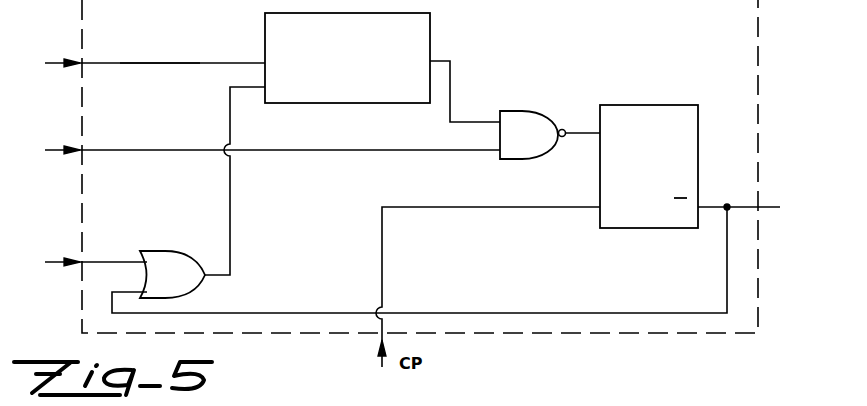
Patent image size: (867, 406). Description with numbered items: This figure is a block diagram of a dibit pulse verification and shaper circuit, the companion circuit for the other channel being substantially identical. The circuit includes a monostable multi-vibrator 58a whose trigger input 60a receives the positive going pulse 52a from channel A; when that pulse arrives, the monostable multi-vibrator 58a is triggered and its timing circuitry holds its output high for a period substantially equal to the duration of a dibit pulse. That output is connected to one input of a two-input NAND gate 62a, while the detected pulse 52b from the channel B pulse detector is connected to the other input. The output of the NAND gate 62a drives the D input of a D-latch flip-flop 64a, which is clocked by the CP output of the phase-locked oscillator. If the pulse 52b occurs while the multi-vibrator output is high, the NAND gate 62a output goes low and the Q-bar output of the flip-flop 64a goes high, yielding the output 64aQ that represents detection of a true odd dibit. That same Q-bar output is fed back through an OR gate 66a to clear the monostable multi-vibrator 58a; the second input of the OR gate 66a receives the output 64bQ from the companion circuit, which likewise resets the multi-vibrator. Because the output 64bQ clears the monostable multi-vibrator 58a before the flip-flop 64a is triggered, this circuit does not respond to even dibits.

The pulse 52a is at (52, 64).
The output of pulse detector 52b is at (54, 154).
The input 60a is at (127, 62).
The monostable multi-vibrator 58a is at (398, 103).
The two-input NAND gate 62a is at (537, 160).
The D-latch flip-flop 64a is at (640, 228).
The OR gate 66a is at (172, 242).
The output of pulse verification and shaper circuit 54b 64bQ is at (74, 273).
The output of pulse verification and shaper circuit 54a 64aQ is at (826, 175).